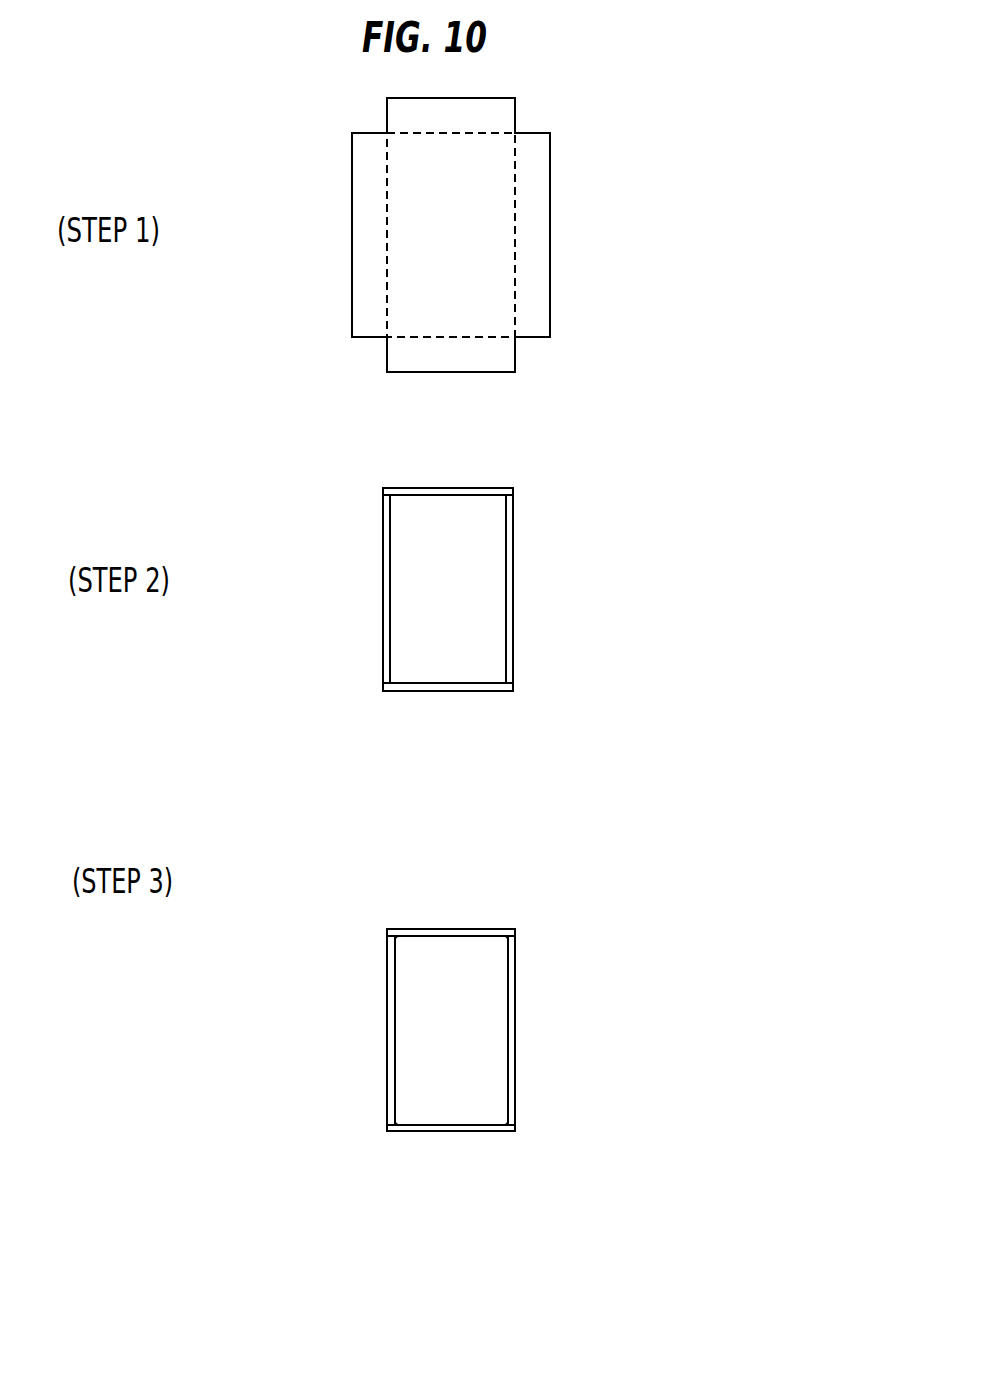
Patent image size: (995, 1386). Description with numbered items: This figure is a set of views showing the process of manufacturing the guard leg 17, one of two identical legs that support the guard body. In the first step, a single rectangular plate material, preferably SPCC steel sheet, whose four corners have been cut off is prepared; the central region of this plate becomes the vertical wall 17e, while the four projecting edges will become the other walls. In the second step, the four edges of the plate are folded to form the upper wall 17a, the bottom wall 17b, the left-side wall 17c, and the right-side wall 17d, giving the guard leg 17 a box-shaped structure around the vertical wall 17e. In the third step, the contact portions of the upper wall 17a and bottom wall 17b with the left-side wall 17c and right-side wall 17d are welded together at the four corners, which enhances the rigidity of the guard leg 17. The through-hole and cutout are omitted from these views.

The guard leg 17 is at (568, 209).
The upper wall 17a is at (468, 488).
The bottom wall 17b is at (488, 691).
The left-side wall 17c is at (383, 605).
The right-side wall 17d is at (512, 635).
The vertical wall 17e is at (472, 572).